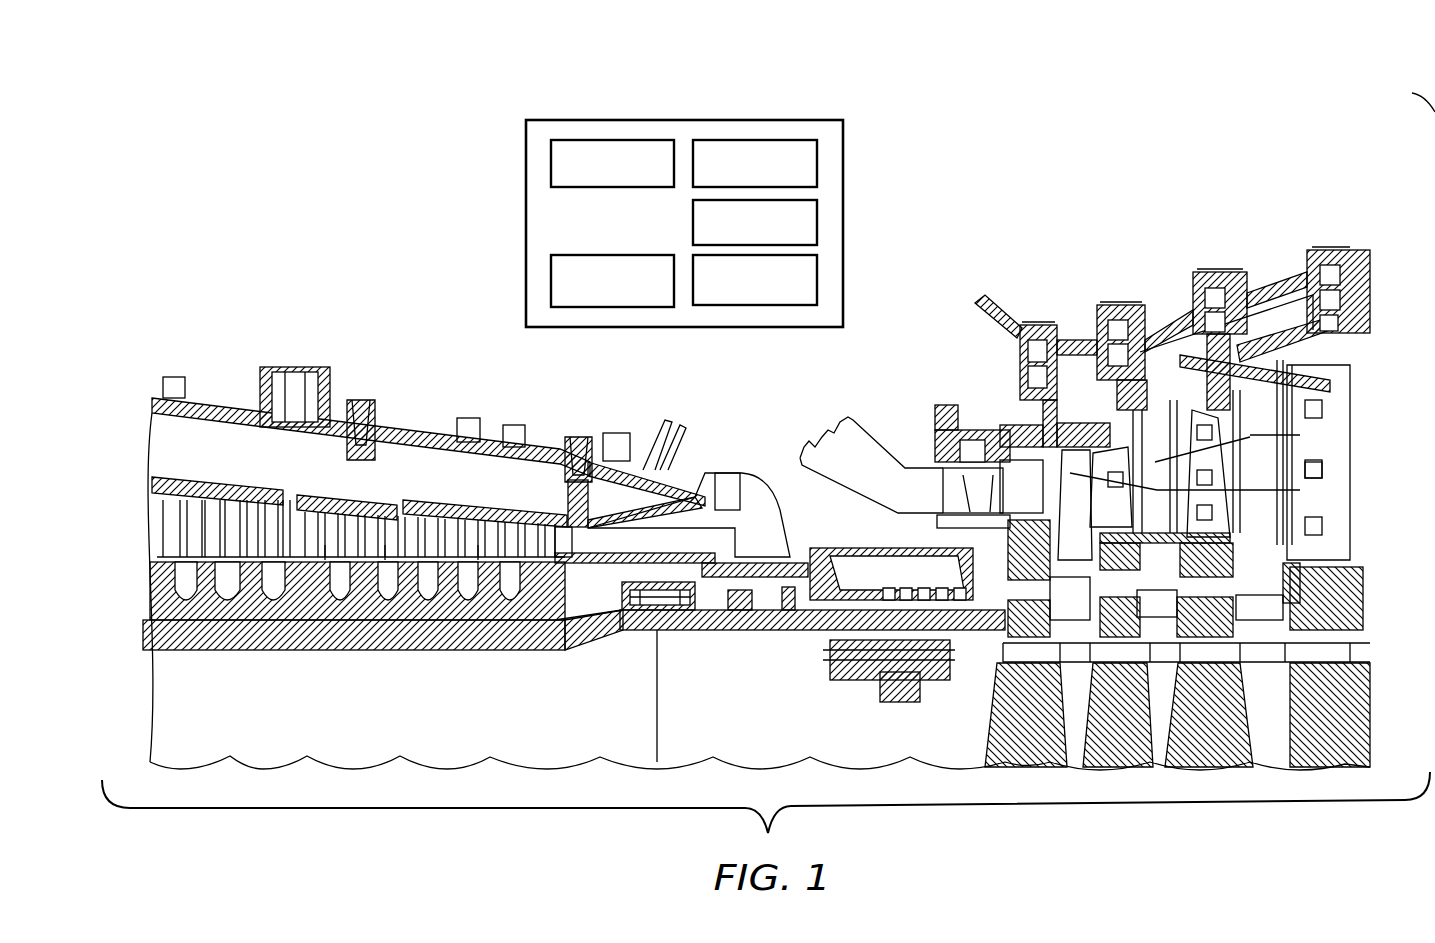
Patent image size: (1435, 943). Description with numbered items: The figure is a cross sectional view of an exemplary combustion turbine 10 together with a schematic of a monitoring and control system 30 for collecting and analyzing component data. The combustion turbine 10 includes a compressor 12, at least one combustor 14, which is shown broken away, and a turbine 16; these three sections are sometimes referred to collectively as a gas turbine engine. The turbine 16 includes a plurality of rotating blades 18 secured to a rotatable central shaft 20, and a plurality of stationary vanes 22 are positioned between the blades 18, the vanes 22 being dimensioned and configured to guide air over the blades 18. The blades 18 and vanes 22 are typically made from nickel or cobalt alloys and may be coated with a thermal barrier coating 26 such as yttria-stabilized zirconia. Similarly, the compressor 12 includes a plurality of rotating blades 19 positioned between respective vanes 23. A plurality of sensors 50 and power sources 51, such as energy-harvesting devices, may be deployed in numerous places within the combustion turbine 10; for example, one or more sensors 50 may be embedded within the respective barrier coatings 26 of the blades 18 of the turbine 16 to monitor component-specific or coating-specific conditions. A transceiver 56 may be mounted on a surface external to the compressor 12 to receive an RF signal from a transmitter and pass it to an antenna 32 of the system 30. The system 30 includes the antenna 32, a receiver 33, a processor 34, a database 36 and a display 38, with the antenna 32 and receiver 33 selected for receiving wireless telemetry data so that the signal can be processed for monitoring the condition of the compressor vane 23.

The combustion turbine 10 is at (1103, 158).
The compressor 12 is at (357, 338).
The combustor 14 is at (872, 467).
The turbine 16 is at (1220, 215).
The rotating blades 18 is at (1102, 460).
The rotating blades 19 is at (215, 540).
The rotatable central shaft 20 is at (781, 632).
The stationary vanes 22 is at (1120, 463).
The vanes 23 is at (205, 545).
The thermal barrier coating 26 is at (1070, 473).
The monitoring and control system 30 is at (618, 120).
The antenna 32 is at (818, 281).
The receiver 33 is at (818, 223).
The processor 34 is at (818, 165).
The database 36 is at (551, 165).
The display 38 is at (551, 281).
The sensors 50 is at (1063, 477).
The power sources 51 is at (1322, 467).
The transceiver 56 is at (175, 378).